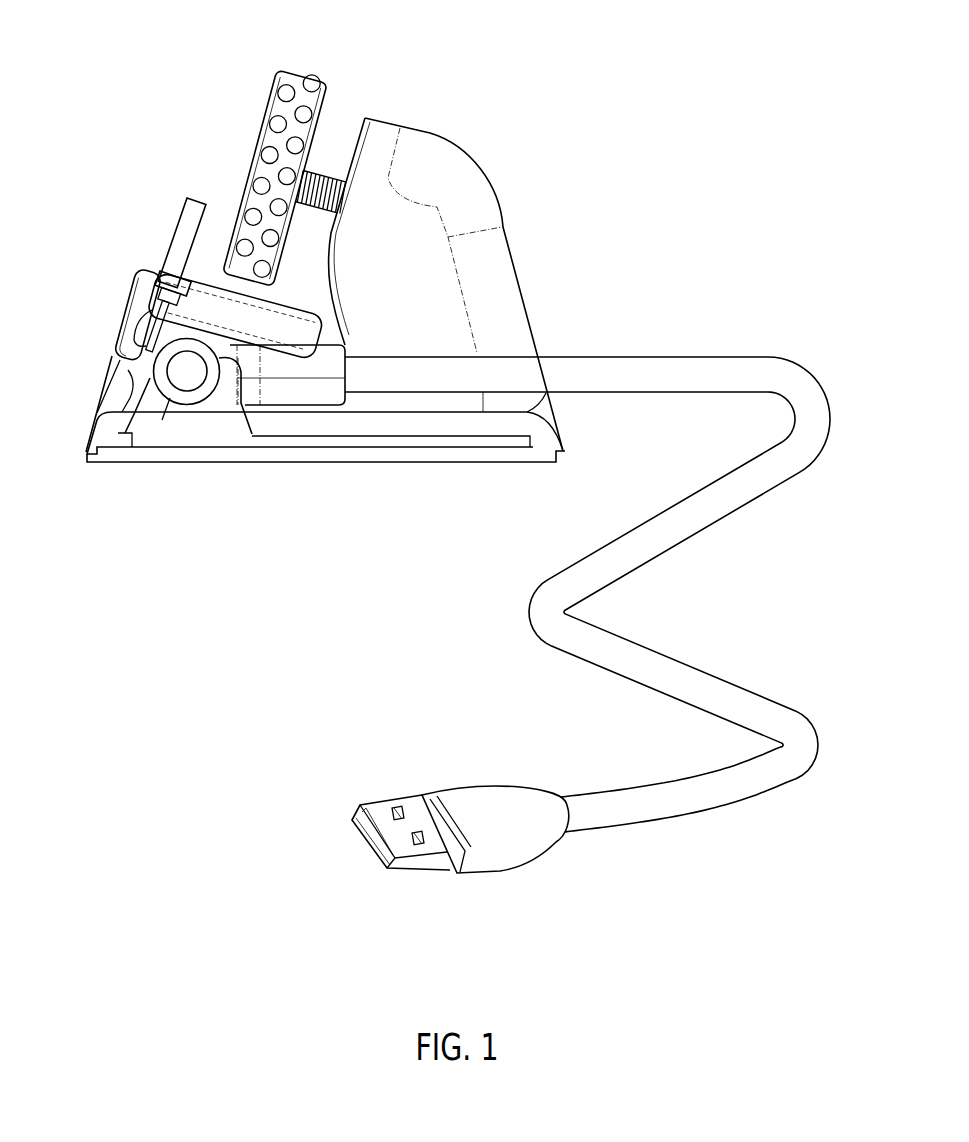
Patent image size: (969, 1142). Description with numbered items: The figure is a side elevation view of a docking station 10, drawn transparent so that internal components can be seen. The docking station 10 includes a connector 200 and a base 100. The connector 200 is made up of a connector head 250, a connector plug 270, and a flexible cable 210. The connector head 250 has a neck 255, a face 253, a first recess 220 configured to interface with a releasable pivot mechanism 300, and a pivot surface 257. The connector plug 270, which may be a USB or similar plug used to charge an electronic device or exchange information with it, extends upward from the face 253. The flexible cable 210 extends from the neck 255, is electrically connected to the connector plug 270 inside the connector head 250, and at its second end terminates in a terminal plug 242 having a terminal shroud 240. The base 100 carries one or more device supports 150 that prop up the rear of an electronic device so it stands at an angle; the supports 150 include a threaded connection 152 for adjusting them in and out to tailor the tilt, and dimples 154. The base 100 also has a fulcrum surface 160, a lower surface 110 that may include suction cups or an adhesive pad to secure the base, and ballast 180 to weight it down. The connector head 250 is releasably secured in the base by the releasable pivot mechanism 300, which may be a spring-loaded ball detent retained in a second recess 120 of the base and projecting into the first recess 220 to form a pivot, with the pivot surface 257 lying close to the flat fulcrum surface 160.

The docking station 10 is at (516, 73).
The base 100 is at (412, 208).
The lower surface 110 is at (443, 462).
The second recess 120 is at (217, 383).
The device support 150 is at (268, 88).
The threaded connection 152 is at (323, 220).
The dimples 154 is at (310, 107).
The fulcrum surface 160 is at (283, 328).
The ballast 180 is at (220, 430).
The connector 200 is at (848, 343).
The flexible cable 210 is at (717, 367).
The first recess 220 is at (168, 392).
The terminal shroud 240 is at (478, 797).
The terminal plug 242 is at (378, 810).
The connector head 250 is at (113, 373).
The face 253 is at (168, 283).
The neck 255 is at (307, 392).
The pivot surface 257 is at (120, 395).
The connector plug 270 is at (192, 210).
The releasable pivot mechanism 300 is at (185, 380).